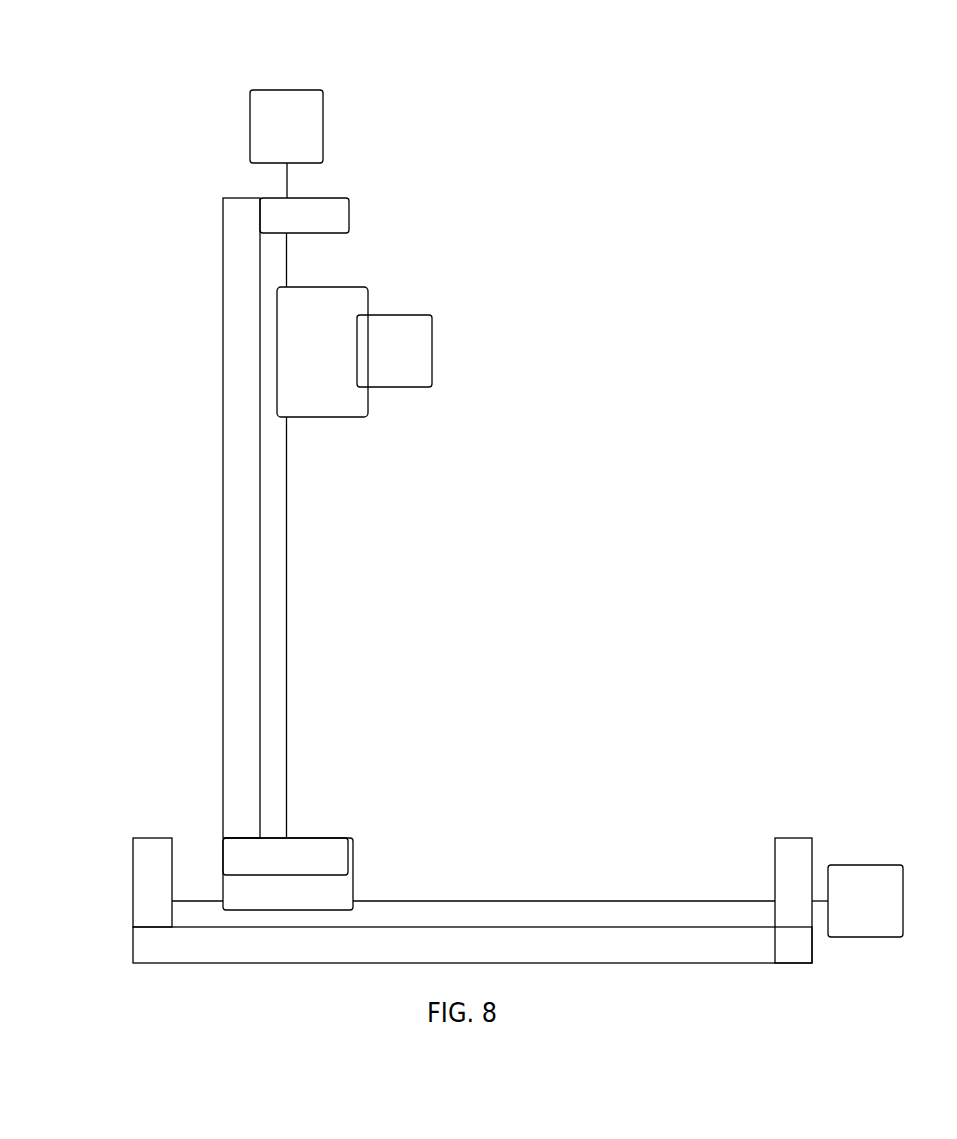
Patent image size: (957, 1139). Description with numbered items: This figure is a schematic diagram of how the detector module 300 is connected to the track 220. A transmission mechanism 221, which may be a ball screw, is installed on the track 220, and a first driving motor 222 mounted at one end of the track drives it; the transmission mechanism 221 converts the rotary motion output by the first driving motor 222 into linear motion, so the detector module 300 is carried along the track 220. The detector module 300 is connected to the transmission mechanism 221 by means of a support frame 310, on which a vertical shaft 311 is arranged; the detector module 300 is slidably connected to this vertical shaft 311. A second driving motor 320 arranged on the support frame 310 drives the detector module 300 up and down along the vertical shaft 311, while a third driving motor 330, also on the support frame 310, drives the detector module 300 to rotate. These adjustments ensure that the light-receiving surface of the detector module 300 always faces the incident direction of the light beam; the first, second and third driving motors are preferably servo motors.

The track 220 is at (132, 952).
The transmission mechanism 221 is at (645, 898).
The first driving motor 222 is at (873, 862).
The detector module 300 is at (322, 352).
The support frame 310 is at (217, 427).
The vertical shaft 311 is at (287, 578).
The second driving motor 320 is at (245, 137).
The third driving motor 330 is at (415, 392).